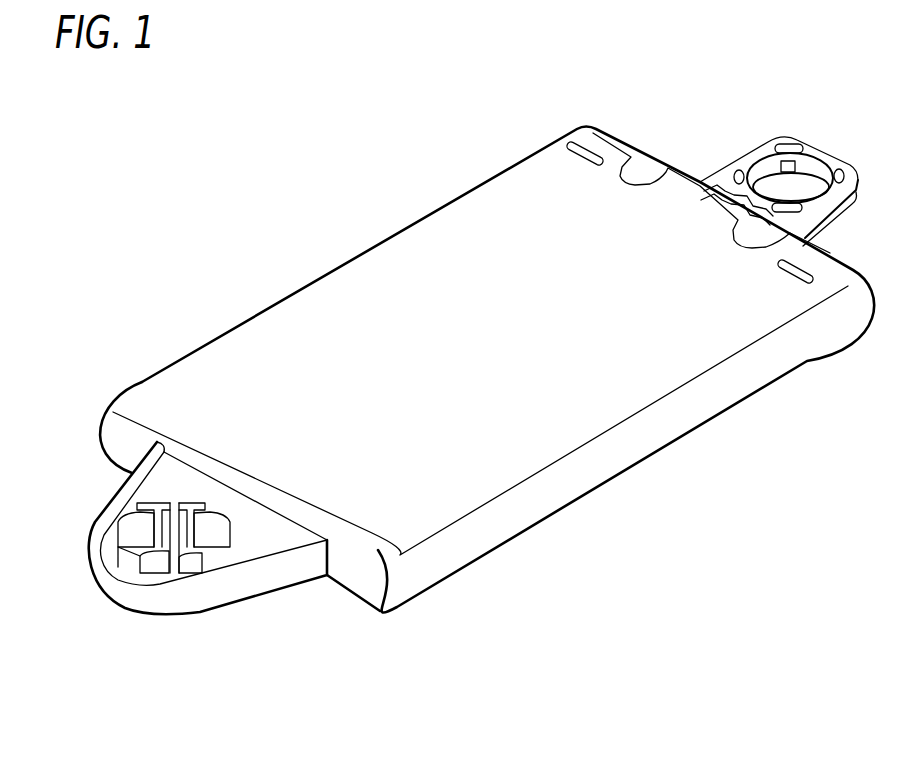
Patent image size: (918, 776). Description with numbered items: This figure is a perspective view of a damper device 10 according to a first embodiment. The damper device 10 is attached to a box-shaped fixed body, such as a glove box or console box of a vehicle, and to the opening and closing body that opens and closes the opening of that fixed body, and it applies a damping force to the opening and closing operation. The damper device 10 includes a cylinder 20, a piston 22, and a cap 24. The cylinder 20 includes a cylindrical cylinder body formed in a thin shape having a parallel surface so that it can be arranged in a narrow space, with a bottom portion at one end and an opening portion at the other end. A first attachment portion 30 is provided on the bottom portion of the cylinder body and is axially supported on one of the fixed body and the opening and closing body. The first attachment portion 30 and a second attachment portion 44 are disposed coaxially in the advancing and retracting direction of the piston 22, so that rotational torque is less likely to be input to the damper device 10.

The damper device 10 is at (531, 590).
The cylinder 20 is at (343, 298).
The piston 22 is at (727, 166).
The cap 24 is at (658, 168).
The first attachment portion 30 is at (152, 572).
The second attachment portion 44 is at (813, 167).